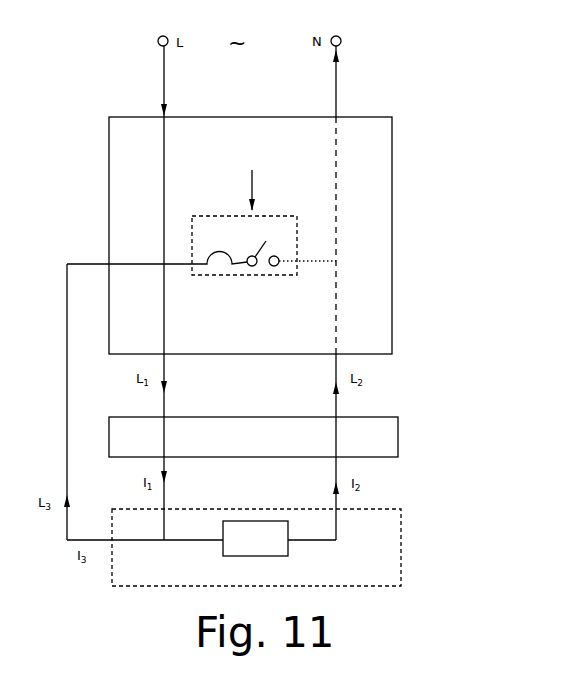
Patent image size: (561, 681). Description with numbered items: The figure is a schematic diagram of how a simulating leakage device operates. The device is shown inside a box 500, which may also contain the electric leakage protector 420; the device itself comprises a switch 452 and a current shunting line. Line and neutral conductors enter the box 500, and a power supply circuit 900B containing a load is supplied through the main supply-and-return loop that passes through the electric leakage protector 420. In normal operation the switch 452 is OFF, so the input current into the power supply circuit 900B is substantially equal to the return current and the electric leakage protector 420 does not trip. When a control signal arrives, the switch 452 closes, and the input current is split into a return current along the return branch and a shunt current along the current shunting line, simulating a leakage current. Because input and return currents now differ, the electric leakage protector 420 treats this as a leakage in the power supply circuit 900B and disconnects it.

The box 500 is at (395, 145).
The switch 452 is at (268, 214).
The electric leakage protector 420 is at (400, 437).
The power supply circuit 900B is at (402, 542).